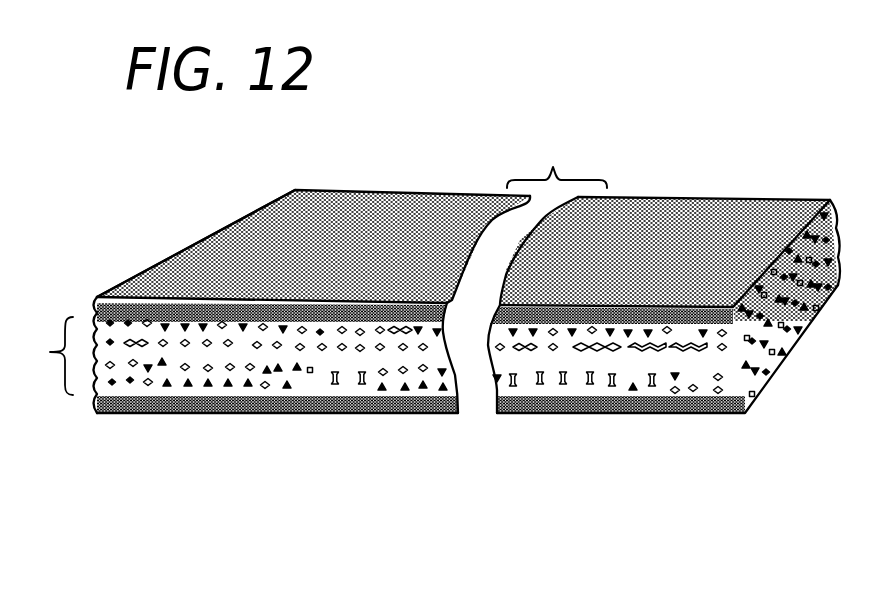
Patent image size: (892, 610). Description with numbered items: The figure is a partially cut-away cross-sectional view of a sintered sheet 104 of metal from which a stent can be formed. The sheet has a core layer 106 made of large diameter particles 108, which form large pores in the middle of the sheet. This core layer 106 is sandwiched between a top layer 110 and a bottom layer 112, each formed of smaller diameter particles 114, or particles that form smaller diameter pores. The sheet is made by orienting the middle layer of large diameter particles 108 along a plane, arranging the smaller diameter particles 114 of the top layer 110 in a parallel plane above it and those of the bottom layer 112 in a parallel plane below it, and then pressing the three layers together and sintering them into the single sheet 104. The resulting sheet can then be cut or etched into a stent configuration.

The sintered sheet 104 is at (165, 442).
The core layer 106 is at (52, 352).
The large diameter particles 108 is at (148, 353).
The top layer 110 is at (97, 297).
The bottom layer 112 is at (100, 413).
The smaller diameter particles 114 is at (352, 318).